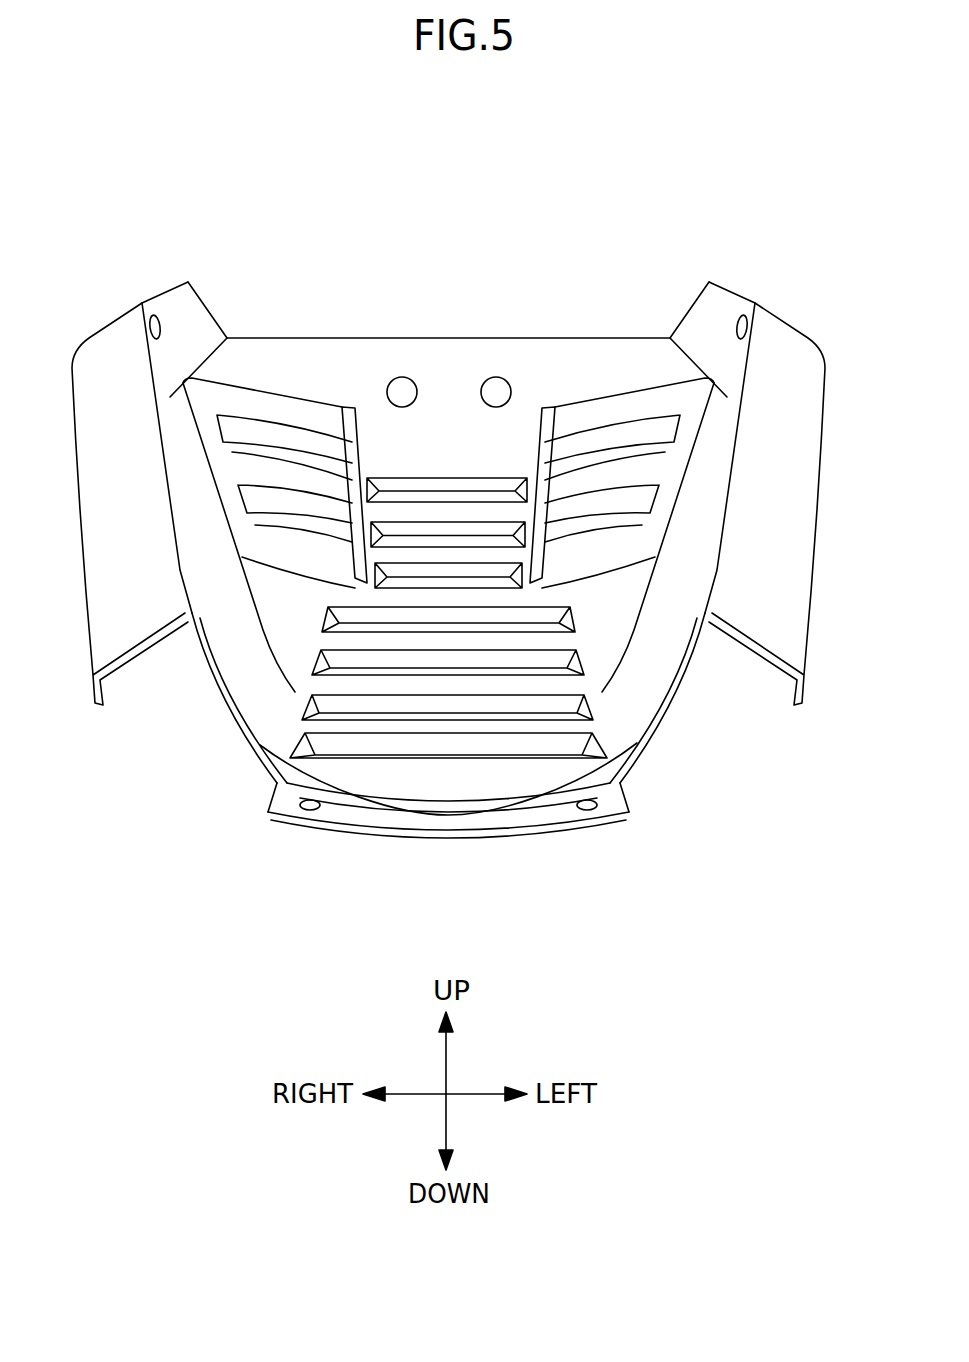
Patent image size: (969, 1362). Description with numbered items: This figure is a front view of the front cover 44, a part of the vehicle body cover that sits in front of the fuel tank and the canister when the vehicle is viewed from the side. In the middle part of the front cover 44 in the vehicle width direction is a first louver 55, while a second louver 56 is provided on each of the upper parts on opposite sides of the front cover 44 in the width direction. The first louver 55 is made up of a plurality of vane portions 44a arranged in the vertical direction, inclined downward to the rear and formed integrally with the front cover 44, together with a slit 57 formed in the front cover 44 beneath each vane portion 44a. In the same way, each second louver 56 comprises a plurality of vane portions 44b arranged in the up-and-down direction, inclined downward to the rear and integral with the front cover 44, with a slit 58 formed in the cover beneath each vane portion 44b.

The front cover 44 is at (445, 350).
The vane portion 44a is at (347, 657).
The vane portion 44b is at (268, 498).
The first louver 55 is at (407, 765).
The second louver 56 is at (310, 548).
The slit 57 is at (499, 710).
The slit 58 is at (330, 527).